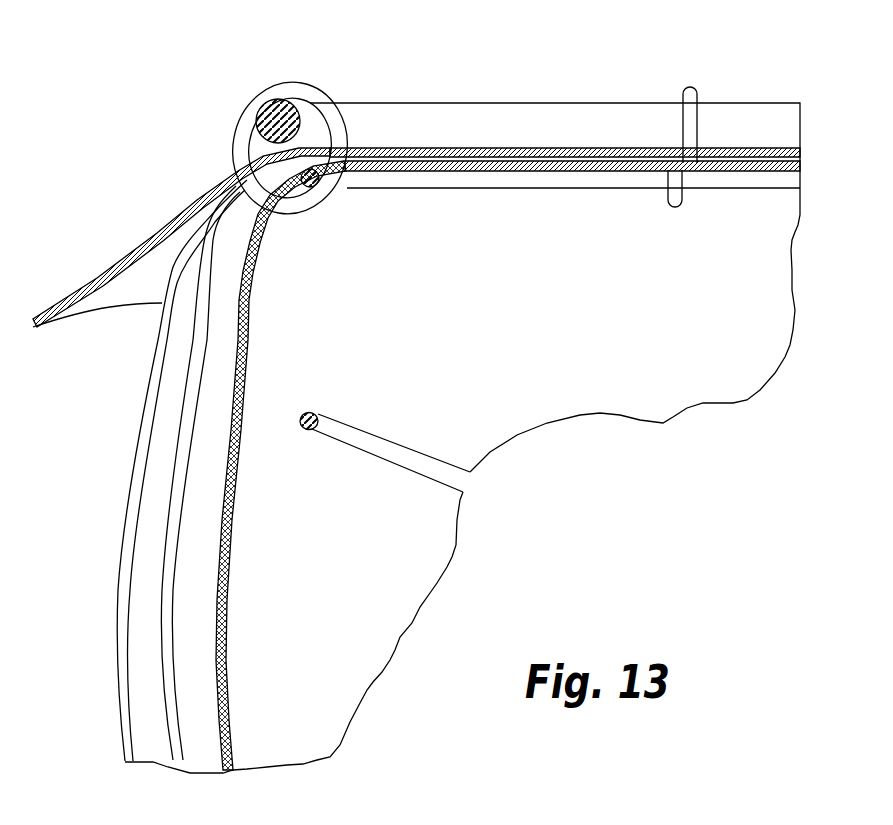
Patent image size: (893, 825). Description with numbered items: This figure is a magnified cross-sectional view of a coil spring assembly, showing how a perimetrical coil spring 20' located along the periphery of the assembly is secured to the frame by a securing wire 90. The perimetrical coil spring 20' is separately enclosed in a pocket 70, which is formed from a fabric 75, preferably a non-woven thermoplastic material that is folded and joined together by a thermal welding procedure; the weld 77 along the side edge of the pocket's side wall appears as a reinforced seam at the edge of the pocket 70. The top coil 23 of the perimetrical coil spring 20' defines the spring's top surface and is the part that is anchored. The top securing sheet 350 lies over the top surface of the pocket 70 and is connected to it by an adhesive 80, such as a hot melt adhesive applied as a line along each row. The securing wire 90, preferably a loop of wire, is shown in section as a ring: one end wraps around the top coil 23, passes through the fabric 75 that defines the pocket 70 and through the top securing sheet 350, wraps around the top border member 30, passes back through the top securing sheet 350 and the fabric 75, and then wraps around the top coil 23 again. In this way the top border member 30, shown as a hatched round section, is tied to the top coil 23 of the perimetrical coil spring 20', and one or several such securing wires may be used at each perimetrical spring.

The perimetrical coil spring 20' is at (572, 127).
The top coil 23 is at (311, 176).
The top border member 30 is at (305, 125).
The pocket 70 is at (598, 320).
The fabric 75 is at (170, 440).
The weld 77 is at (215, 242).
The adhesive 80 is at (448, 147).
The securing wire 90 is at (232, 127).
The top securing sheet 350 is at (108, 284).